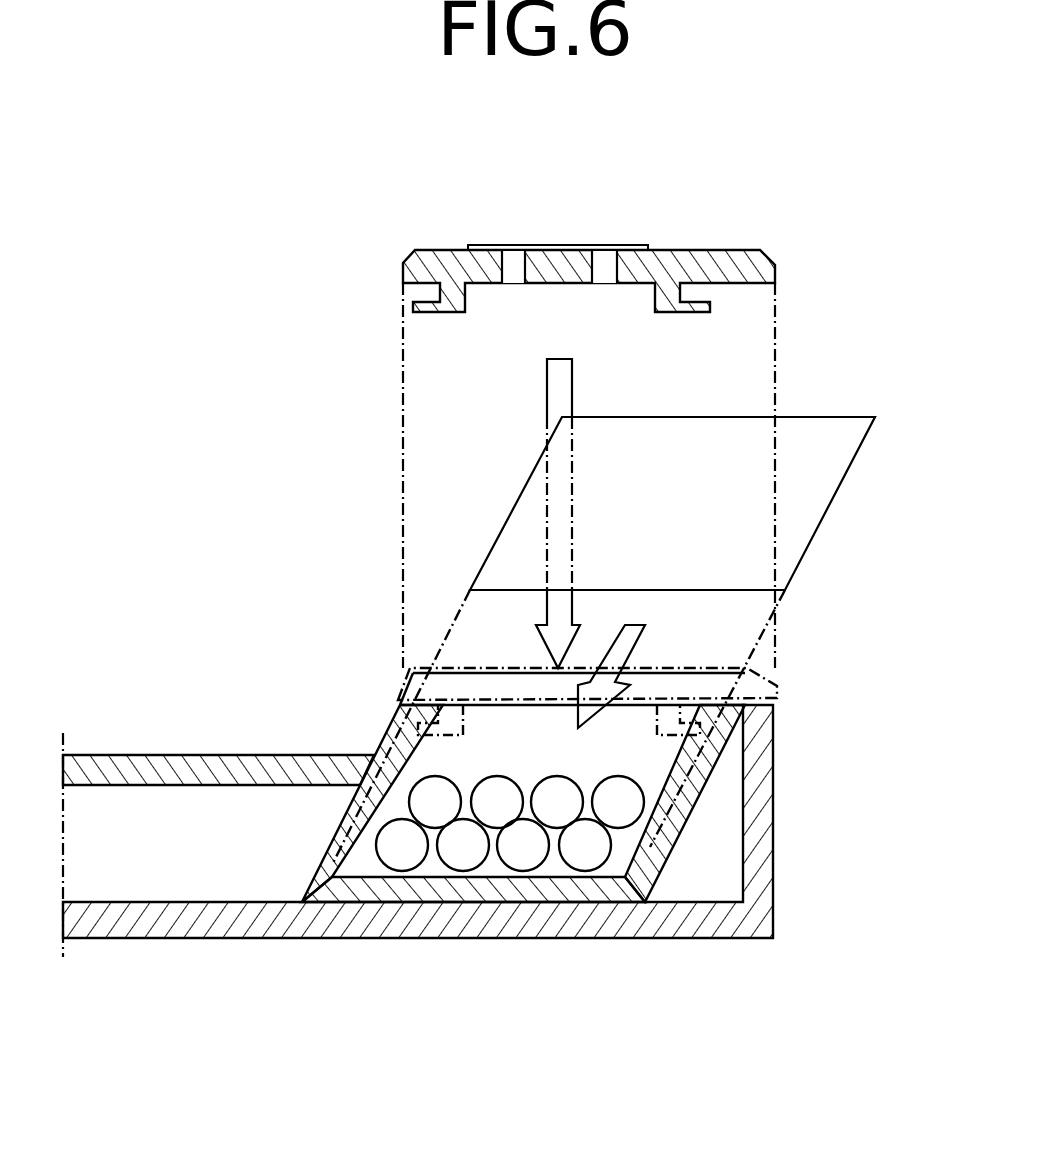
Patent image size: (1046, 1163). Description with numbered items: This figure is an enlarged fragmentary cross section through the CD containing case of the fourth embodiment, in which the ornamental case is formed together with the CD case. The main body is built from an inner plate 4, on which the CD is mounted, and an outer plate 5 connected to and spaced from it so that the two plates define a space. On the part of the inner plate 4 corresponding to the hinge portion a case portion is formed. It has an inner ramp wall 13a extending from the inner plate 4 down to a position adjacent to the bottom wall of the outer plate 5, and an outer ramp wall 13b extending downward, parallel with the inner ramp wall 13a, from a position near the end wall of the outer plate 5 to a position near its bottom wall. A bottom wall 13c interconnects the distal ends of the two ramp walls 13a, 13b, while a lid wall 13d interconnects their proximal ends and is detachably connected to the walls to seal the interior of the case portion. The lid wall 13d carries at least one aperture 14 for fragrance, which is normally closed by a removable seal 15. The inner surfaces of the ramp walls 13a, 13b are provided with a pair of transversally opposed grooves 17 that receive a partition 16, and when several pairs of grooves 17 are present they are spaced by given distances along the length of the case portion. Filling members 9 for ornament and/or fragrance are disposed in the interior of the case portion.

The inner plate 4 is at (130, 738).
The outer plate 5 is at (140, 948).
The filling members 9 is at (463, 845).
The inner ramp wall 13a is at (333, 835).
The outer ramp wall 13b is at (677, 820).
The bottom wall 13c is at (597, 895).
The lid wall 13d is at (715, 262).
The aperture 14 is at (505, 270).
The removable seal 15 is at (568, 248).
The partition 16 is at (818, 500).
The grooves 17 is at (395, 722).